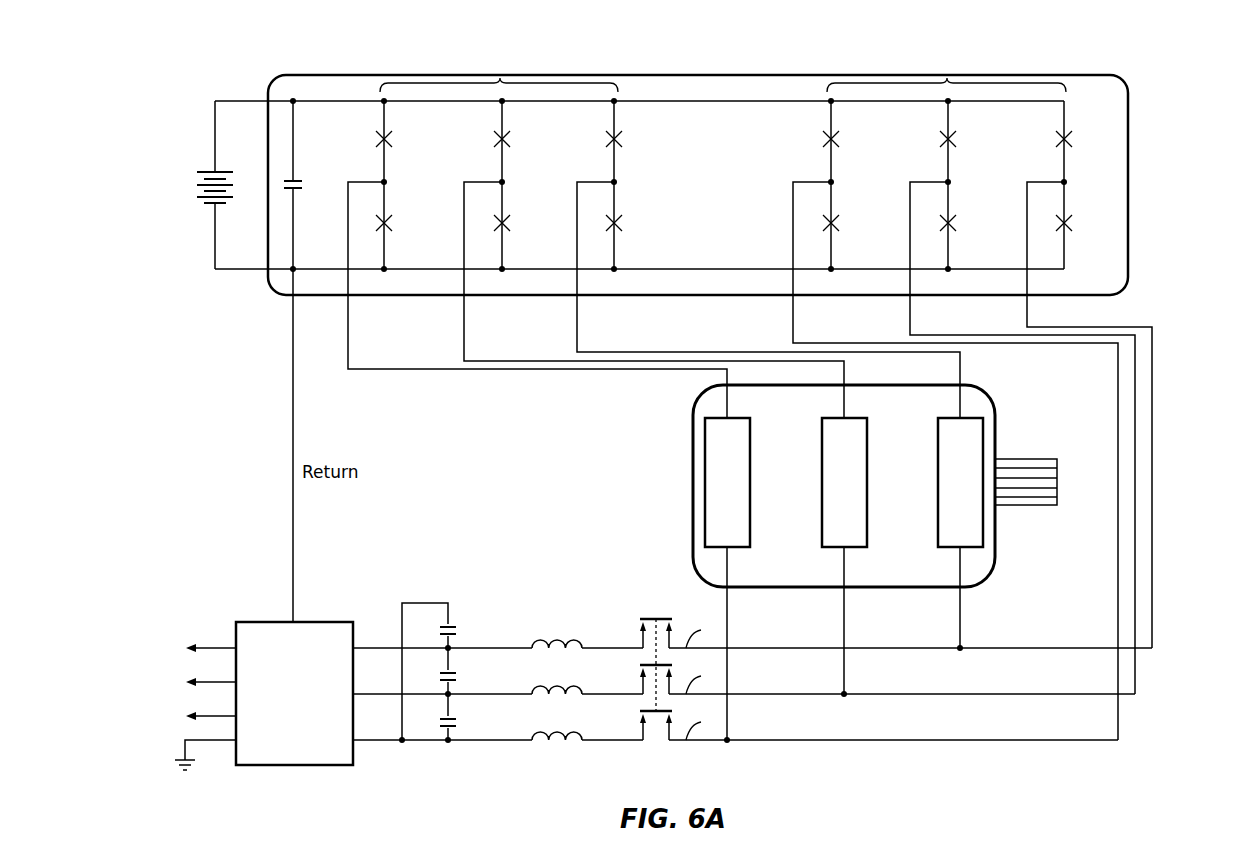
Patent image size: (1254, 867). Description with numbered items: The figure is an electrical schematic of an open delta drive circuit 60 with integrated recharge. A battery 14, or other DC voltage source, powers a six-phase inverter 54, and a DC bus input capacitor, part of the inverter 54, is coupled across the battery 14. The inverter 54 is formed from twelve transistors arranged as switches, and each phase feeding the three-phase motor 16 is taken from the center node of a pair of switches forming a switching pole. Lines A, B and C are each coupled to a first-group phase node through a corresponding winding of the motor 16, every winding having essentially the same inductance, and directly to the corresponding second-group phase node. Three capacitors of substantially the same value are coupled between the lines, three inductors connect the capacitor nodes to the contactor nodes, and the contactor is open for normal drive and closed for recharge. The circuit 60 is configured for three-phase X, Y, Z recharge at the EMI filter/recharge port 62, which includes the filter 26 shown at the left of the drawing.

The battery 14 is at (195, 147).
The six-phase inverter 54 is at (1130, 186).
The open delta drive circuit 60 is at (1180, 92).
The three-phase motor 16 is at (997, 437).
The filter 26 is at (258, 622).
The EMI filter/recharge port 62 is at (133, 747).